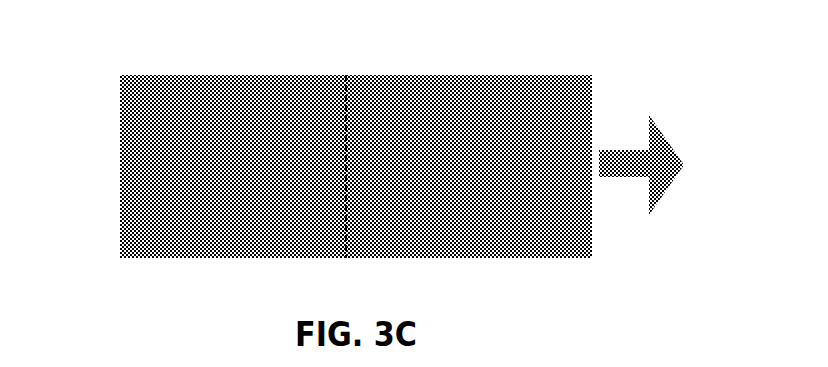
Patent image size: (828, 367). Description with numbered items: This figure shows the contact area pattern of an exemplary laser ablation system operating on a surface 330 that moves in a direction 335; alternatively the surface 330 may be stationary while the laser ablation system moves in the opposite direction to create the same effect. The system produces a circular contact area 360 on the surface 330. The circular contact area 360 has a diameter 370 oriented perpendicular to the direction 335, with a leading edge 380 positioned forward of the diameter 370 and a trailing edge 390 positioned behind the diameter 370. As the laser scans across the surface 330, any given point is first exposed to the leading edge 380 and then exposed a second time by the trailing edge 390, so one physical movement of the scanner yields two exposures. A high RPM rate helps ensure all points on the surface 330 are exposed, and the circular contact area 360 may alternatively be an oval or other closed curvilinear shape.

The surface 330 is at (592, 107).
The direction 335 is at (680, 157).
The circular contact area pattern 360 is at (252, 96).
The diameter 370 is at (347, 218).
The leading edge 380 is at (410, 105).
The trailing edge 390 is at (258, 131).